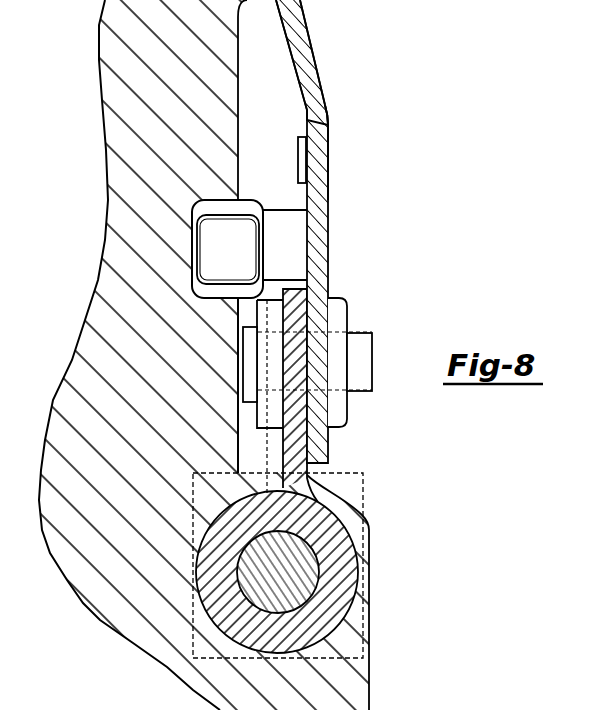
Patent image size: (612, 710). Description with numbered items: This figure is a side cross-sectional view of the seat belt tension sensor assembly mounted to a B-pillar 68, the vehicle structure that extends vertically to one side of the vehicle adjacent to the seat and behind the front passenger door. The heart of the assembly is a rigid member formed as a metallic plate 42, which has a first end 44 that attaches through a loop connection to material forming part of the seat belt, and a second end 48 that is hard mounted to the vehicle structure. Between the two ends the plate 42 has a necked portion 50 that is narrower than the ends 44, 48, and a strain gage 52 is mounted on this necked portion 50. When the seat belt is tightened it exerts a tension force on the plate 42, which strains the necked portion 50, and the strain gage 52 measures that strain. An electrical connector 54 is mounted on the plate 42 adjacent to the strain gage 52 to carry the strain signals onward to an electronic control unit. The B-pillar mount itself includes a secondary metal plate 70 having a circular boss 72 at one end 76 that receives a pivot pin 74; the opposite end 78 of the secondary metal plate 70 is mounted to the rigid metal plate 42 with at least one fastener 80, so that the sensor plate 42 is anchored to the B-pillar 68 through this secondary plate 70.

The metallic plate 42 is at (317, 251).
The first end 44 is at (300, 32).
The second end 48 is at (330, 447).
The necked portion 50 is at (328, 157).
The strain gage 52 is at (298, 167).
The electrical connector 54 is at (192, 245).
The B-pillar 68 is at (90, 597).
The secondary metal plate 70 is at (285, 455).
The circular boss 72 is at (233, 588).
The pivot pin 74 is at (300, 560).
The one end 76 is at (338, 626).
The opposite end 78 is at (274, 311).
The fastener 80 is at (243, 362).